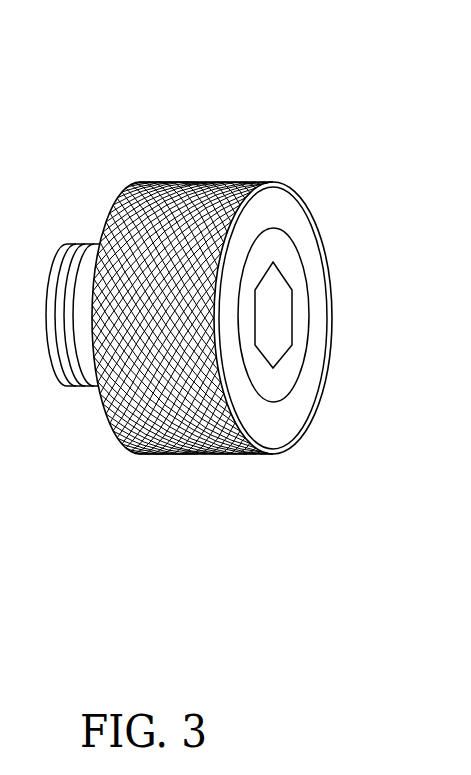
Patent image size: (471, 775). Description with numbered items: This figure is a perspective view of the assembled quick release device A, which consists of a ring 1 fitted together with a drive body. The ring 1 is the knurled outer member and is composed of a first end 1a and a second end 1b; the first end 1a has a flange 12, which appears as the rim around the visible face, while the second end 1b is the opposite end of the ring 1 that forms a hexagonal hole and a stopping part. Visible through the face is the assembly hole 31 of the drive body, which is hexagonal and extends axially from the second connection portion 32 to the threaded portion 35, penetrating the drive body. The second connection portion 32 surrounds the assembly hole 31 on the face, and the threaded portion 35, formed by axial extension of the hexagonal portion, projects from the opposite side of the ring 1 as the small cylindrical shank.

The ring 1 is at (213, 181).
The first end 1a is at (302, 413).
The second end 1b is at (113, 428).
The flange 12 is at (289, 189).
The assembly hole 31 is at (285, 322).
The second connection portion 32 is at (285, 256).
The threaded portion 35 is at (70, 243).
The quick release device A is at (259, 95).